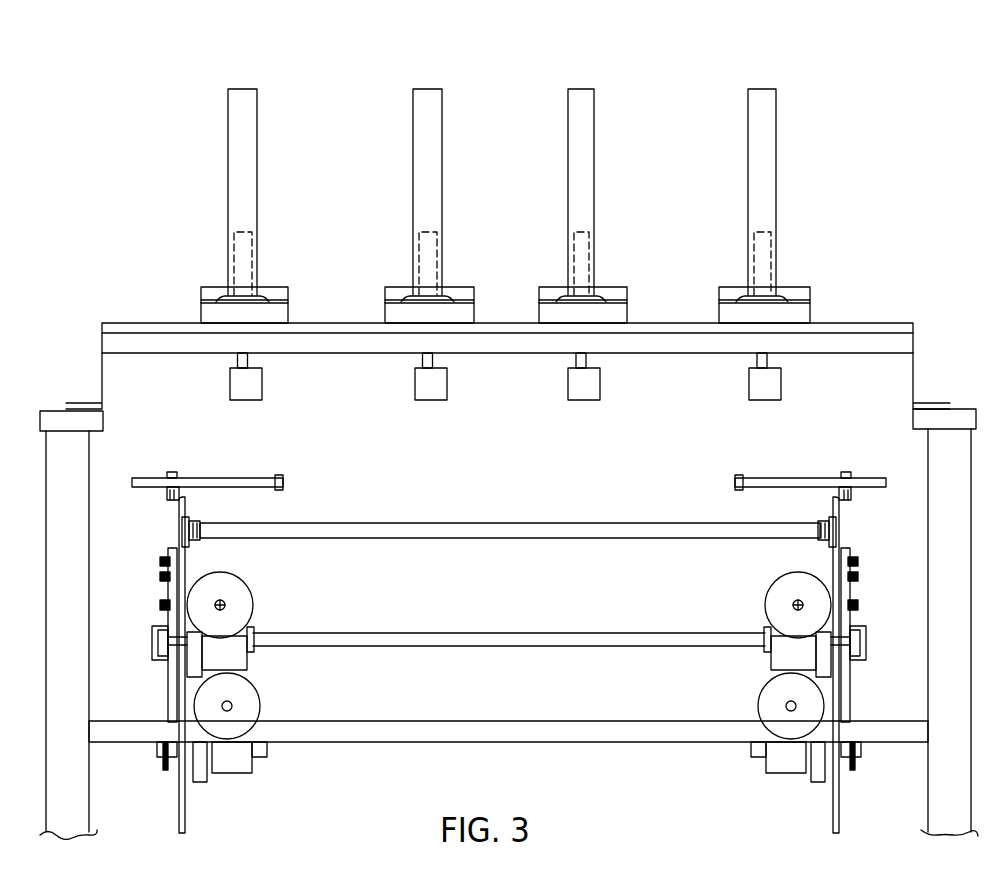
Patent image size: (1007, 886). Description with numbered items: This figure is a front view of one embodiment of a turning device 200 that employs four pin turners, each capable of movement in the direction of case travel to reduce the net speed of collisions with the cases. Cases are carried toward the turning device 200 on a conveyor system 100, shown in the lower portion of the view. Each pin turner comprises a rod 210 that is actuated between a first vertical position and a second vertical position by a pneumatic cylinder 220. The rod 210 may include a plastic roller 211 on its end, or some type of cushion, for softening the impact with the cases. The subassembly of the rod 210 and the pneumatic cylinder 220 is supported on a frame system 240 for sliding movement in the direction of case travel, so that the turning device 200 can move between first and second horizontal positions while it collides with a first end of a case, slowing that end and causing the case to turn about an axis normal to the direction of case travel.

The turning device 200 is at (501, 239).
The pneumatic cylinder 220 is at (228, 182).
The rod 210 is at (250, 357).
The plastic roller 211 is at (243, 402).
The frame system 240 is at (118, 322).
The conveyor system 100 is at (641, 495).